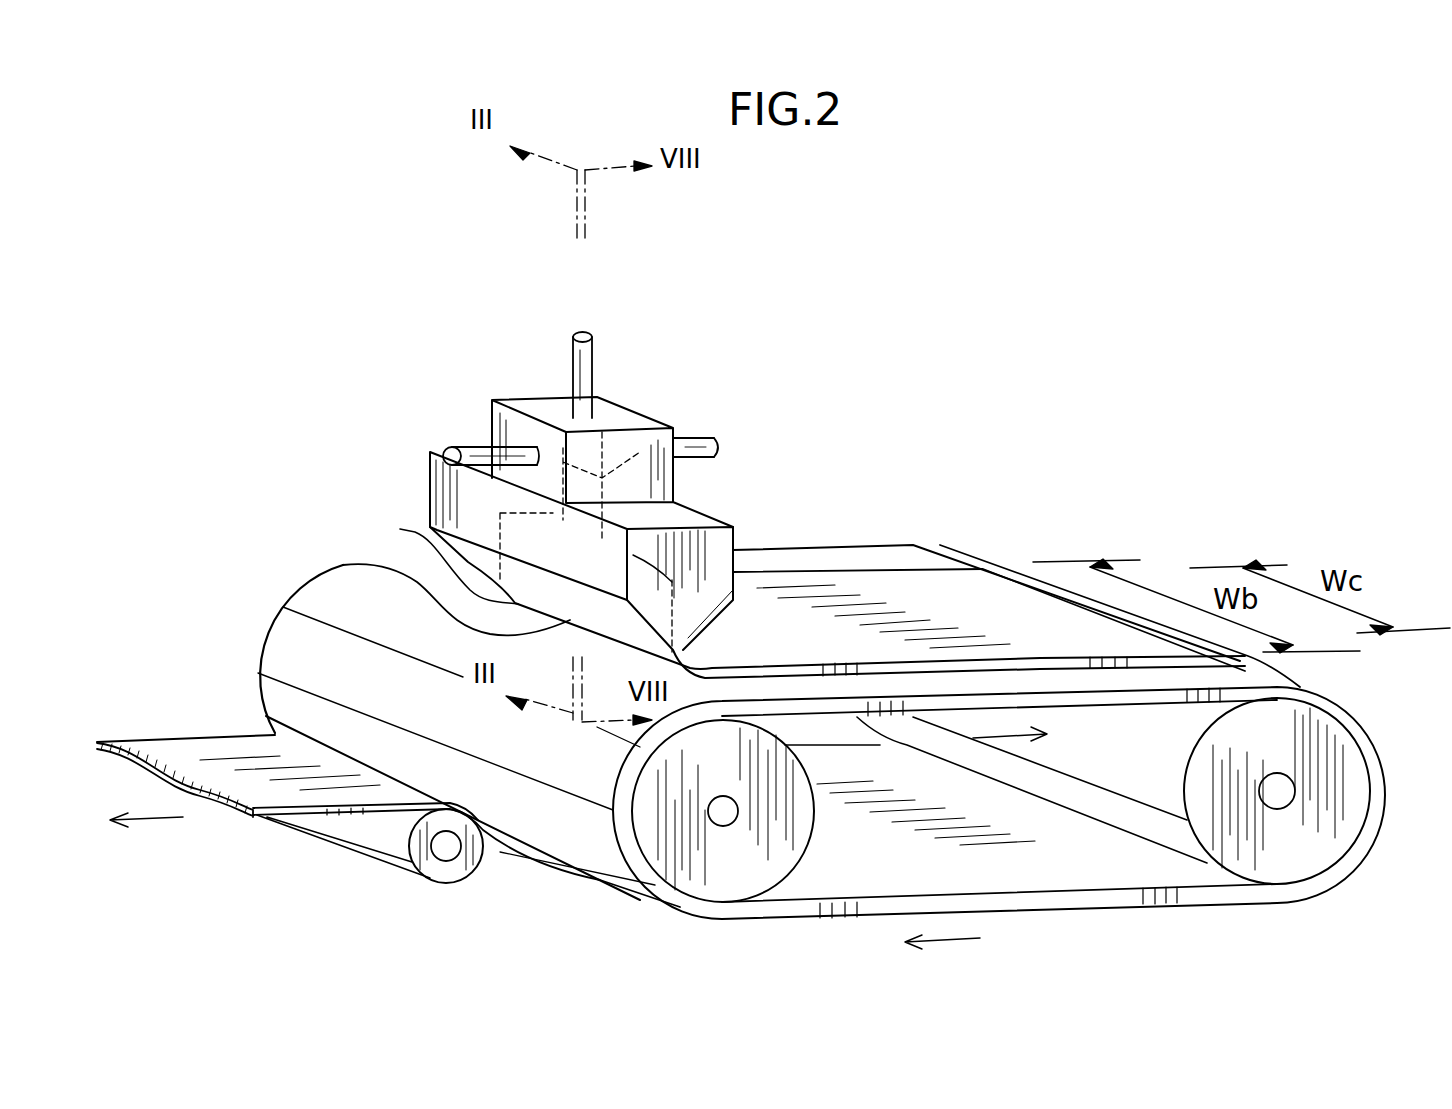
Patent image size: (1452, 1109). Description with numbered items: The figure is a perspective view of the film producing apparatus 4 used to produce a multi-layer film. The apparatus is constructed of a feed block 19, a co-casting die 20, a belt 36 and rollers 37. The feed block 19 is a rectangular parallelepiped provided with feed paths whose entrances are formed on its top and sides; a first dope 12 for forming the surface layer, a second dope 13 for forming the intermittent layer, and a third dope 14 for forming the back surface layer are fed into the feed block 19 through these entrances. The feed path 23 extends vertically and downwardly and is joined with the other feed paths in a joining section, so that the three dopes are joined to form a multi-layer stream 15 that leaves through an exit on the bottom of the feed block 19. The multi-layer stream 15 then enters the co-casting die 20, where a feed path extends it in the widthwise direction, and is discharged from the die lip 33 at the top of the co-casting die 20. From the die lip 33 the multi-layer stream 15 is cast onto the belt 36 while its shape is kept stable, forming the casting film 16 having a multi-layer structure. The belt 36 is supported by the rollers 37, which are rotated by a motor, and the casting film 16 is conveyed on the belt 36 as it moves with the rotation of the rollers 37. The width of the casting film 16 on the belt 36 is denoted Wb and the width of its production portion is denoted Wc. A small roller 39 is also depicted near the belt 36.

The film producing apparatus 4 is at (1168, 324).
The first dope 12 is at (745, 455).
The second dope 13 is at (590, 304).
The third dope 14 is at (403, 469).
The multi-layer stream 15 is at (400, 529).
The casting film 16 is at (933, 612).
The feed block 19 is at (628, 406).
The co-casting die 20 is at (740, 505).
The feed path 23 is at (470, 522).
The die lip 33 is at (463, 562).
The belt 36 is at (255, 700).
The rollers 37 is at (815, 842).
The guide roller 39 is at (447, 885).